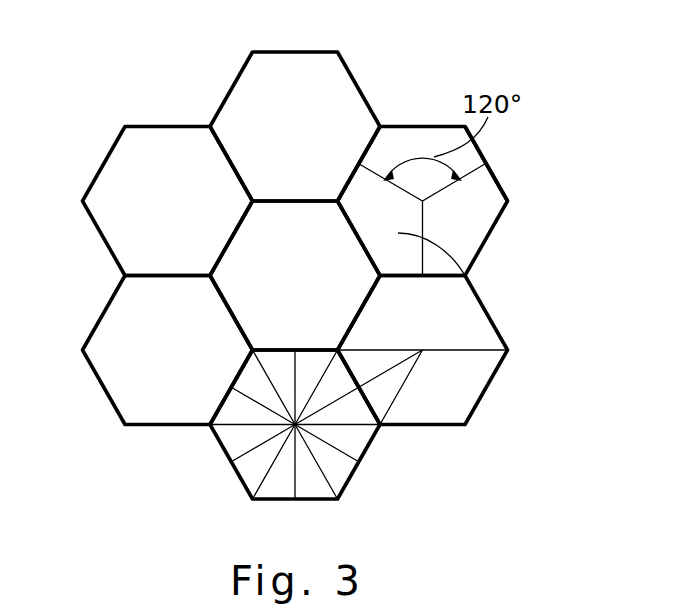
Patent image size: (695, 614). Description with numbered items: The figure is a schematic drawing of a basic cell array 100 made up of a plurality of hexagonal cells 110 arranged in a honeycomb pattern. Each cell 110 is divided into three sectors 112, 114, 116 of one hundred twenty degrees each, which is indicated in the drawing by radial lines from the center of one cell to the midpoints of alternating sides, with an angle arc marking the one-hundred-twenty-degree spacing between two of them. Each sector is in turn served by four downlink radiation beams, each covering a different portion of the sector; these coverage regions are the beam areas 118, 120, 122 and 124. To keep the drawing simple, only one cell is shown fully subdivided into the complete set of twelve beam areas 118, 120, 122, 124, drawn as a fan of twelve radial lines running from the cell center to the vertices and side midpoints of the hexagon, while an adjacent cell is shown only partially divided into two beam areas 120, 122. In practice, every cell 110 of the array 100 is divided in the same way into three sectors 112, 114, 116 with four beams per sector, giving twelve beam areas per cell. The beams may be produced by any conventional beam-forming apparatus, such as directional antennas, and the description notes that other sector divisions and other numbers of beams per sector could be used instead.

The basic cell array 100 is at (527, 129).
The cell 110 is at (139, 126).
The sector 112 is at (428, 138).
The sector 114 is at (476, 191).
The sector 116 is at (465, 276).
The beam area 118 is at (242, 373).
The beam area 120 is at (272, 360).
The beam area 122 is at (312, 367).
The beam area 124 is at (233, 410).